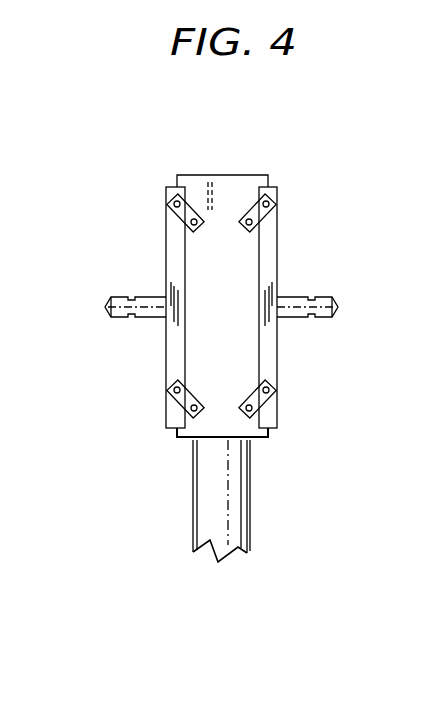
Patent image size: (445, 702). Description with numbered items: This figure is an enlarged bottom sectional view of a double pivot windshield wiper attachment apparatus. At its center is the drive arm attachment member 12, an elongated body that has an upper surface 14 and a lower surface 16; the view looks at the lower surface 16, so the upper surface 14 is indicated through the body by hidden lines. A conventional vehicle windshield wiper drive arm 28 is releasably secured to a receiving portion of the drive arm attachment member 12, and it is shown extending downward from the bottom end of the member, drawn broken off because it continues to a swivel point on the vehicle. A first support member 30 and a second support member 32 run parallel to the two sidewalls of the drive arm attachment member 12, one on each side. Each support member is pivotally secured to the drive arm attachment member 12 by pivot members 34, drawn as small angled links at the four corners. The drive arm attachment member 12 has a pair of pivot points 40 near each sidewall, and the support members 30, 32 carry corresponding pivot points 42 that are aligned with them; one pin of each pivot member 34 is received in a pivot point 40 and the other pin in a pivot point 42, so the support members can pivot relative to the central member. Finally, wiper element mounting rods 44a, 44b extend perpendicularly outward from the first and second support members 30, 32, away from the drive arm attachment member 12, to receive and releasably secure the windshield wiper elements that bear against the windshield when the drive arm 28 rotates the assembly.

The drive arm attachment member 12 is at (222, 187).
The upper surface 14 is at (203, 181).
The lower surface 16 is at (234, 312).
The windshield wiper drive arm 28 is at (232, 538).
The first support member 30 is at (166, 352).
The second support member 32 is at (268, 353).
The pivot member 34 is at (237, 318).
The pivot points 40 is at (250, 219).
The pivot points 42 is at (175, 199).
The first wiper element mounting rod 44a is at (340, 310).
The second wiper element mounting rod 44b is at (105, 306).